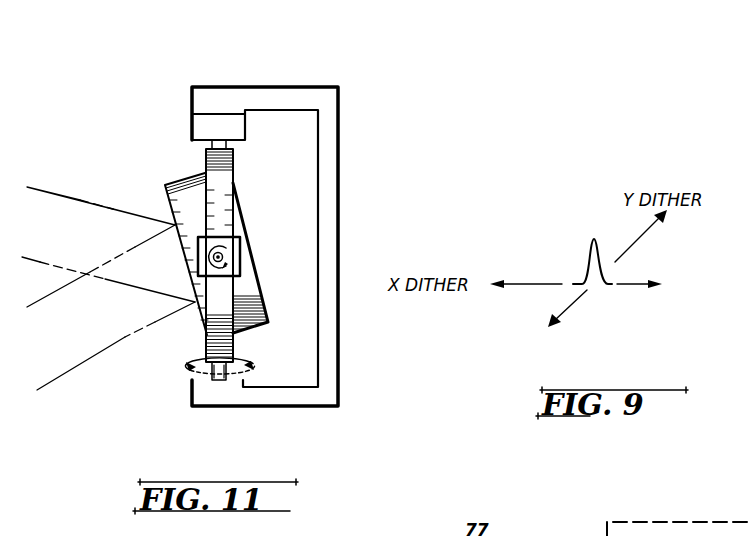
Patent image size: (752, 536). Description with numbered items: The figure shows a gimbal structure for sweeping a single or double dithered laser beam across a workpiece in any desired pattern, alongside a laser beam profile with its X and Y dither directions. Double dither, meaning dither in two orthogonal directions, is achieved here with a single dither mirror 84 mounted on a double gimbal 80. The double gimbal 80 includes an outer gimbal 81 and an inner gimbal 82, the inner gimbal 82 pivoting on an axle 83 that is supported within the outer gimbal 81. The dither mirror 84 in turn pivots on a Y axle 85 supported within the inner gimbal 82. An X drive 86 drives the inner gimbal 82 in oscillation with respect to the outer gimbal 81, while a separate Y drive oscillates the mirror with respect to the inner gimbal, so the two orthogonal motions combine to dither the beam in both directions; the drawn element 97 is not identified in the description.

The double gimbal 80 is at (245, 82).
The outer gimbal 81 is at (338, 397).
The inner gimbal 82 is at (234, 338).
The axle 83 is at (228, 146).
The dither mirror 84 is at (168, 182).
The Y axle 85 is at (243, 245).
The X drive 86 is at (198, 128).
The motor rotor 97 is at (242, 258).